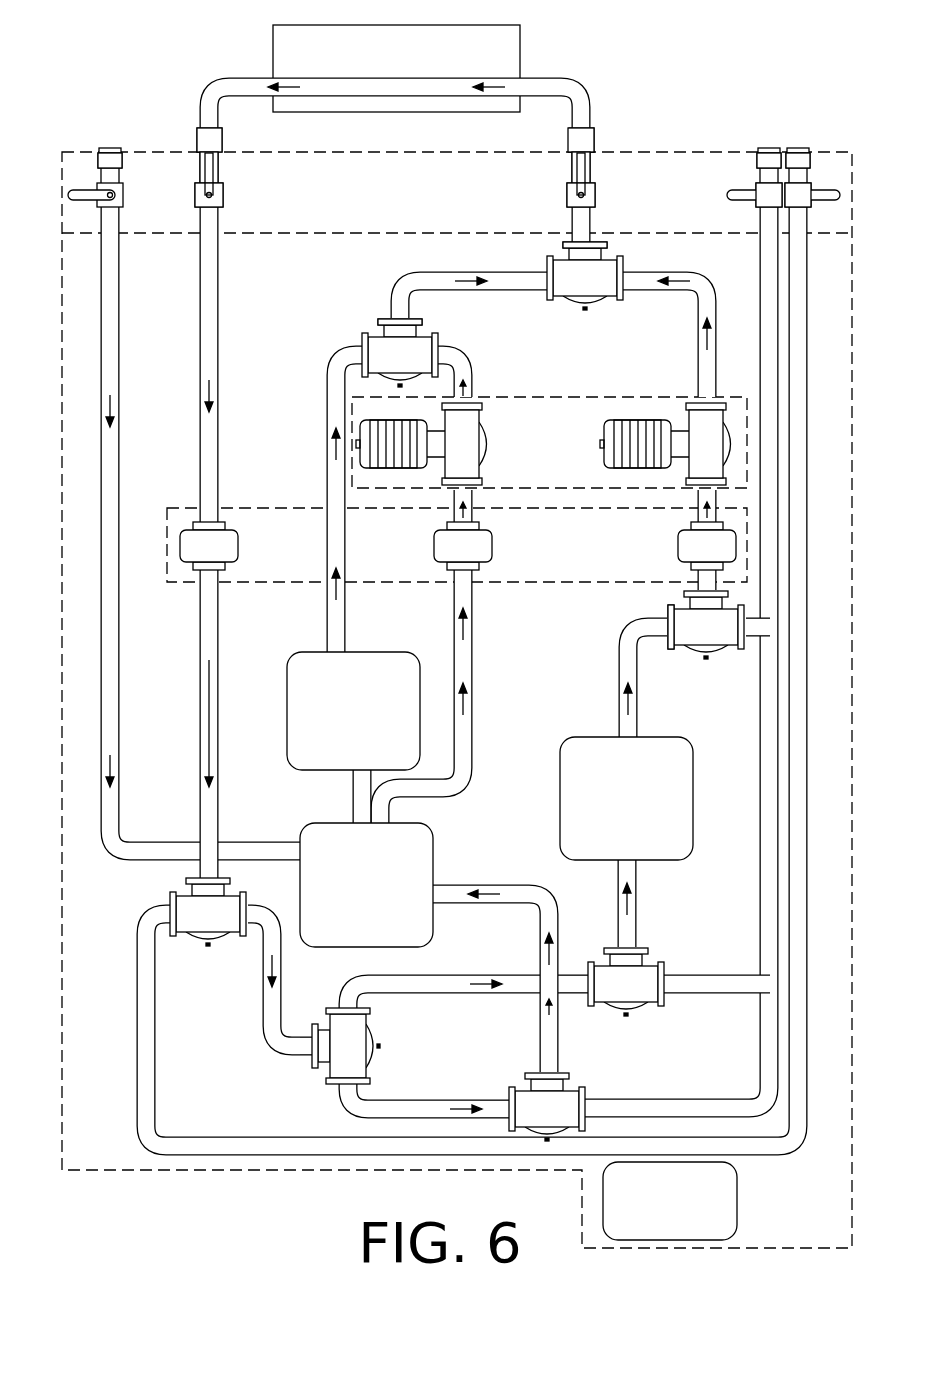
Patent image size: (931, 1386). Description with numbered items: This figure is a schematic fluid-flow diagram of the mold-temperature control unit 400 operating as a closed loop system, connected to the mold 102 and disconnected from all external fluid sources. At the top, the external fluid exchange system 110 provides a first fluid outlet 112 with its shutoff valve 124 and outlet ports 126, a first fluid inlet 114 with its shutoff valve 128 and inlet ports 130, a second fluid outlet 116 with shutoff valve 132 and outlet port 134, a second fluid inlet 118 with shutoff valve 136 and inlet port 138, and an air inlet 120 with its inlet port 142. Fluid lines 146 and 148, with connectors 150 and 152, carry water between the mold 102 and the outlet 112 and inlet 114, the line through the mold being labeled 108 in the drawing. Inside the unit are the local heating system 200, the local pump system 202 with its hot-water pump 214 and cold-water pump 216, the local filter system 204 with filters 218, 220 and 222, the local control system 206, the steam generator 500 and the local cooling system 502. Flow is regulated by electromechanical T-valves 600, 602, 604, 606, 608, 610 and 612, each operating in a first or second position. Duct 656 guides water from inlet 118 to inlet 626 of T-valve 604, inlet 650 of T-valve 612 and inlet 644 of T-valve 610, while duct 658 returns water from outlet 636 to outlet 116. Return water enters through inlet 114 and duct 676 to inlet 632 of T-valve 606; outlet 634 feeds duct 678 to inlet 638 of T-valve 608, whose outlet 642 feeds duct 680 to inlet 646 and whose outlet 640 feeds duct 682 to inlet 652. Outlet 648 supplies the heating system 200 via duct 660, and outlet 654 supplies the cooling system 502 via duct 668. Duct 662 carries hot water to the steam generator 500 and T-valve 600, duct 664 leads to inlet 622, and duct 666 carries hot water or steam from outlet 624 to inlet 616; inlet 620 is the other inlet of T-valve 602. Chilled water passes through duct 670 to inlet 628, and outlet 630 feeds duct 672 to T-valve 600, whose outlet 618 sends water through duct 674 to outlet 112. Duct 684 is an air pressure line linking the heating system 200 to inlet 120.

The mold 102 is at (396, 68).
The heat exchanger pipe 108 is at (347, 88).
The external fluid exchange system 110 is at (457, 207).
The first fluid outlet 112 is at (569, 159).
The first fluid inlet 114 is at (221, 159).
The second fluid outlet 116 is at (819, 164).
The second fluid inlet 118 is at (740, 164).
The air inlet 120 is at (119, 163).
The shutoff valve 124 is at (568, 194).
The outlet ports 126 is at (572, 164).
The shutoff valve 128 is at (223, 196).
The inlet ports 130 is at (219, 163).
The shutoff valve 132 is at (808, 205).
The outlet port 134 is at (808, 162).
The shutoff valve 136 is at (762, 205).
The inlet port 138 is at (762, 162).
The inlet port 142 is at (122, 162).
The fluid line 146 is at (578, 97).
The fluid line 148 is at (211, 97).
The connector 150 is at (568, 141).
The connector 152 is at (222, 141).
The local heating system 200 is at (366, 885).
The local pump system 202 is at (549, 442).
The local filter system 204 is at (457, 545).
The local control system 206 is at (670, 1201).
The hot-water pump 214 is at (421, 444).
The cold-water pump 216 is at (665, 444).
The filter 218 is at (707, 530).
The filter 220 is at (463, 546).
The filter 222 is at (209, 546).
The mold-temperature control unit 400 is at (457, 700).
The steam generator 500 is at (353, 711).
The local cooling system 502 is at (626, 798).
The T-valve 600 is at (585, 276).
The T-valve 602 is at (400, 353).
The T-valve 604 is at (706, 625).
The T-valve 606 is at (208, 912).
The T-valve 608 is at (346, 1046).
The T-valve 610 is at (547, 1107).
The T-valve 612 is at (626, 982).
The second inlet 616 is at (547, 287).
The outlet 618 is at (600, 245).
The first inlet 620 is at (446, 353).
The second inlet 622 is at (364, 353).
The outlet 624 is at (395, 318).
The first inlet 626 is at (745, 642).
The second inlet 628 is at (668, 643).
The outlet 630 is at (698, 585).
The inlet 632 is at (199, 878).
The first outlet 634 is at (250, 905).
The second outlet 636 is at (166, 912).
The inlet 638 is at (305, 1050).
The first outlet 640 is at (348, 1004).
The second outlet 642 is at (348, 1090).
The first inlet 644 is at (587, 1105).
The second inlet 646 is at (508, 1105).
The outlet 648 is at (545, 1072).
The first inlet 650 is at (665, 978).
The second inlet 652 is at (590, 976).
The outlet 654 is at (634, 946).
The fluid duct 656 is at (760, 854).
The fluid duct 658 is at (808, 854).
The fluid duct 660 is at (540, 1025).
The fluid duct 662 is at (472, 730).
The fluid duct 664 is at (346, 624).
The fluid duct 666 is at (440, 278).
The fluid duct 668 is at (618, 876).
The fluid duct 670 is at (618, 655).
The fluid duct 672 is at (697, 360).
The fluid duct 674 is at (582, 226).
The fluid duct 676 is at (199, 280).
The fluid duct 678 is at (266, 1019).
The fluid duct 680 is at (405, 1100).
The fluid duct 682 is at (462, 978).
The air pressure line 684 is at (121, 414).